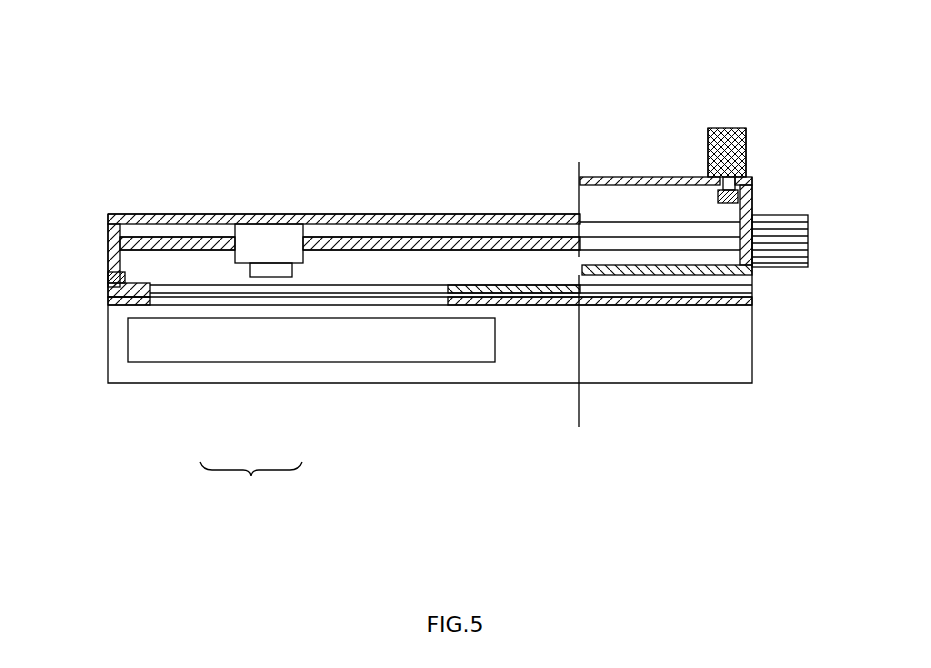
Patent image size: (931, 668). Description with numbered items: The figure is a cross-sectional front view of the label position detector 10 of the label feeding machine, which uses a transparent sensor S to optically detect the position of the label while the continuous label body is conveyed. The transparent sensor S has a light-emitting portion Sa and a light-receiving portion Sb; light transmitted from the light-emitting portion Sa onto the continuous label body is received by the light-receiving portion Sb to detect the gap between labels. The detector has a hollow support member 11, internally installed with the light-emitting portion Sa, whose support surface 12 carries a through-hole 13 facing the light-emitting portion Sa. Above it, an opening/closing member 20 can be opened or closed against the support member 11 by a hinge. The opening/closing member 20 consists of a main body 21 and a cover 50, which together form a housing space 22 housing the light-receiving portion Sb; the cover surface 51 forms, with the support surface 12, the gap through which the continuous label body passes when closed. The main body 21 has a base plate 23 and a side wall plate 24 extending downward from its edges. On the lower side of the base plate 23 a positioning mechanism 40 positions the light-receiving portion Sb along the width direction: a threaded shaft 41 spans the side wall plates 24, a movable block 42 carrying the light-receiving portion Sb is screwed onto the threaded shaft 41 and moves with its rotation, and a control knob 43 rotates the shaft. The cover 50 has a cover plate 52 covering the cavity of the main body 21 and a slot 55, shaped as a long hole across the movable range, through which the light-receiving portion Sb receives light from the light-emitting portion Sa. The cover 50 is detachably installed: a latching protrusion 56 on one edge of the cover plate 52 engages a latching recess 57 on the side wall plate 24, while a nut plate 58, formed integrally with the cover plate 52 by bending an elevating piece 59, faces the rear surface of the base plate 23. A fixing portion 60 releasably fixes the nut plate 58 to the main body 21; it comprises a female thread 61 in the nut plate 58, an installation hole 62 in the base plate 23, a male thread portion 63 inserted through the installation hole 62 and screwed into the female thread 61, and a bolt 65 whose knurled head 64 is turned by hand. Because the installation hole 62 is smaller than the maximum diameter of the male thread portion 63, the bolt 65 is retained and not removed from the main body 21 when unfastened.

The label position detector 10 is at (553, 88).
The support member 11 is at (623, 362).
The support surface 12 is at (538, 296).
The through-hole 13 is at (450, 298).
The opening/closing member 20 is at (166, 214).
The main body 21 is at (386, 224).
The housing space 22 is at (322, 270).
The base plate 23 is at (483, 214).
The side wall plate 24 is at (110, 260).
The positioning mechanism 40 is at (228, 237).
The threaded shaft 41 is at (421, 246).
The movable block 42 is at (268, 246).
The control knob 43 is at (772, 217).
The cover 50 is at (628, 270).
The surface 51 is at (506, 288).
The cover plate 52 is at (558, 288).
The slot 55 is at (443, 292).
The latching protrusion 56 is at (108, 278).
The latching recess 57 is at (108, 285).
The nut plate 58 is at (705, 196).
The elevating piece 59 is at (750, 258).
The fixing portion 60 is at (750, 125).
The female thread 61 is at (718, 195).
The installation hole 62 is at (740, 165).
The male thread portion 63 is at (727, 205).
The head 64 is at (708, 162).
The bolt 65 is at (722, 128).
The transparent sensor S is at (251, 487).
The light-emitting portion Sa is at (245, 350).
The light-receiving portion Sb is at (282, 277).